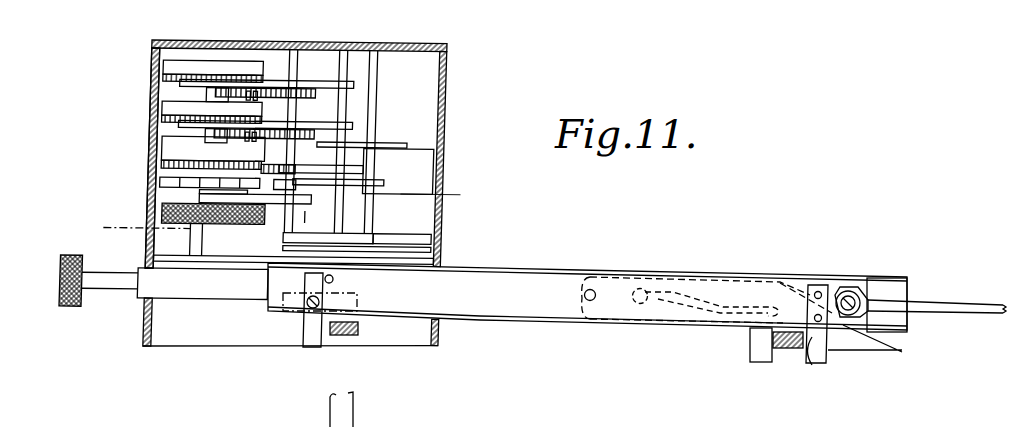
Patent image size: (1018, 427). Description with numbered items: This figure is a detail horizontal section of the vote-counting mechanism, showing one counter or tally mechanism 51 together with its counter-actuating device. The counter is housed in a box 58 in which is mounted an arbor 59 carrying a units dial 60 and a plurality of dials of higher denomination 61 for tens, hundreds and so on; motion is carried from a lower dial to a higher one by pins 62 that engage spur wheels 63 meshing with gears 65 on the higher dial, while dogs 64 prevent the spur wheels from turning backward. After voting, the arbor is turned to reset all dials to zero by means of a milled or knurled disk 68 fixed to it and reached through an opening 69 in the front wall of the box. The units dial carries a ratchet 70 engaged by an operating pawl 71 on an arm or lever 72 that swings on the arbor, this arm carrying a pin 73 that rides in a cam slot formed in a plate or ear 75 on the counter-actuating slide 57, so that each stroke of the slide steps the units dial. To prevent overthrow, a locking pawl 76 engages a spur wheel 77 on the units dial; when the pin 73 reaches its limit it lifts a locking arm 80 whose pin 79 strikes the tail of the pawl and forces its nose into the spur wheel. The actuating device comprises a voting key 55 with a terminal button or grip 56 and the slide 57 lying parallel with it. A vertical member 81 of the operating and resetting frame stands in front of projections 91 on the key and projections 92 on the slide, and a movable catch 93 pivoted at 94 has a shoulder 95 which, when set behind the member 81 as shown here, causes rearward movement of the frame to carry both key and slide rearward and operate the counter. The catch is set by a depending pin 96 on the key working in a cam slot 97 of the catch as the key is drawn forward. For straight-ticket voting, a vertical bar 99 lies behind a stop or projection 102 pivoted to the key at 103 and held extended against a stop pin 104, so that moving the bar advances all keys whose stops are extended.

The counter or tally mechanism 51 is at (272, 198).
The voting key 55 is at (496, 312).
The terminal button or grip 56 is at (75, 305).
The counter-actuating slide 57 is at (908, 293).
The box 58 is at (447, 129).
The arbor 59 is at (218, 53).
The units dial 60 is at (170, 149).
The dials of higher denomination 61 is at (167, 60).
The pins 62 is at (259, 75).
The spur wheels 63 is at (341, 88).
The dogs 64 is at (306, 77).
The gears 65 is at (166, 110).
The milled or knurled disk 68 is at (194, 222).
The opening 69 is at (155, 215).
The ratchet 70 is at (167, 185).
The operating pawl 71 is at (295, 196).
The arm or lever 72 is at (236, 218).
The pin 73 is at (309, 214).
The plate or ear 75 is at (397, 231).
The locking pawl 76 is at (316, 167).
The spur wheel 77 is at (166, 164).
The pin 79 is at (364, 163).
The locking arm 80 is at (387, 178).
The vertical bars or members 81 is at (797, 349).
The projections 91 is at (817, 363).
The projections 92 is at (752, 350).
The movable catch 93 is at (879, 350).
The pivot 94 is at (587, 305).
The shoulder 95 is at (808, 366).
The depending pin 96 is at (641, 290).
The cam slot 97 is at (658, 300).
The vertical bars 99 is at (355, 335).
The stops or projections 102 is at (312, 340).
The pivot 103 is at (295, 312).
The stop pins 104 is at (333, 280).